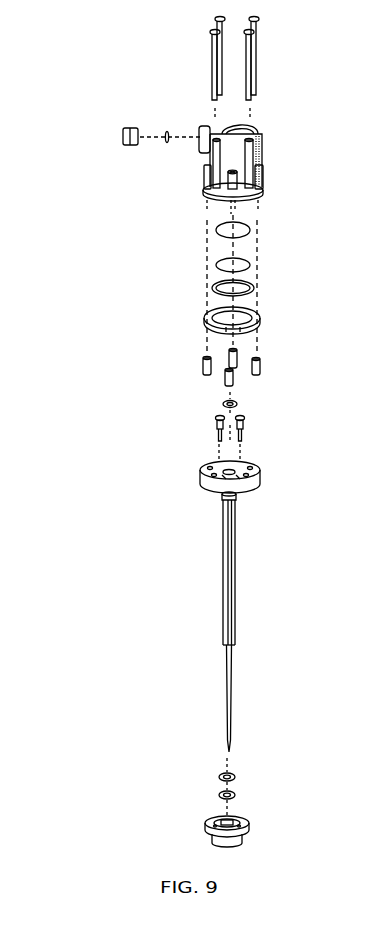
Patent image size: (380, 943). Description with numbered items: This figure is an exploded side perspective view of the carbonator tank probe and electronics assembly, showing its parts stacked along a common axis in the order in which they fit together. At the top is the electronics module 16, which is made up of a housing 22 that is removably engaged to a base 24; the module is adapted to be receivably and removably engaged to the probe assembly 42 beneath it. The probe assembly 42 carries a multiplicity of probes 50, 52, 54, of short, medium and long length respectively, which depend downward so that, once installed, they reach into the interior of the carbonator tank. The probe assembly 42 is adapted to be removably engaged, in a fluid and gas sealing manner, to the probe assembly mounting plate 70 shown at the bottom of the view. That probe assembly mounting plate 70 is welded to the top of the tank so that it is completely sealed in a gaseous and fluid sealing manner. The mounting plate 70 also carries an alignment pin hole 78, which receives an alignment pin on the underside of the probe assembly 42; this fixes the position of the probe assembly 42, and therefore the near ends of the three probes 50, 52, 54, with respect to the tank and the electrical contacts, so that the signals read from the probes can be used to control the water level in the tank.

The electronics module 16 is at (277, 117).
The housing 22 is at (197, 167).
The base 24 is at (180, 322).
The probe assembly 42 is at (193, 483).
The probe 50 is at (245, 563).
The probe 52 is at (252, 617).
The probe 54 is at (243, 688).
The probe assembly mounting plate 70 is at (268, 827).
The alignment pin hole 78 is at (215, 837).